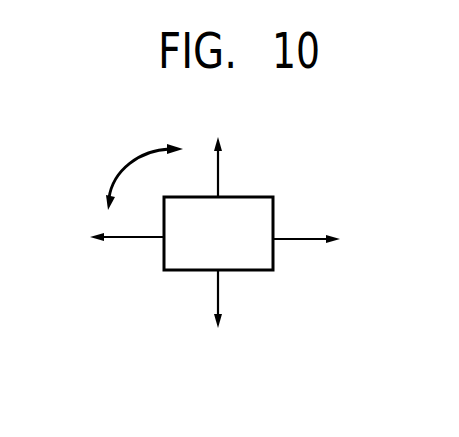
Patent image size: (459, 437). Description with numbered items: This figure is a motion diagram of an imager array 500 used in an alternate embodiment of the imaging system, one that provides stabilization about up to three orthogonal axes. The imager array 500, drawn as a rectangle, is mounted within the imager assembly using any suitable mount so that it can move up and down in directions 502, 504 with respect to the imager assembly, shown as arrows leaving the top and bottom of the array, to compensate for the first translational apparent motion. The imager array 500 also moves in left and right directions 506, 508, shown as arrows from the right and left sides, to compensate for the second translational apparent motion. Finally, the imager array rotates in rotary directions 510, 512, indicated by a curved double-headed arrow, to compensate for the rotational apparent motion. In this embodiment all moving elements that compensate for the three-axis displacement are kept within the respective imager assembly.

The imager array 500 is at (278, 245).
The up direction 502 is at (242, 167).
The down direction 504 is at (243, 300).
The right direction 506 is at (309, 225).
The left direction 508 is at (127, 252).
The rotary direction 510 is at (166, 141).
The rotary direction 512 is at (103, 194).